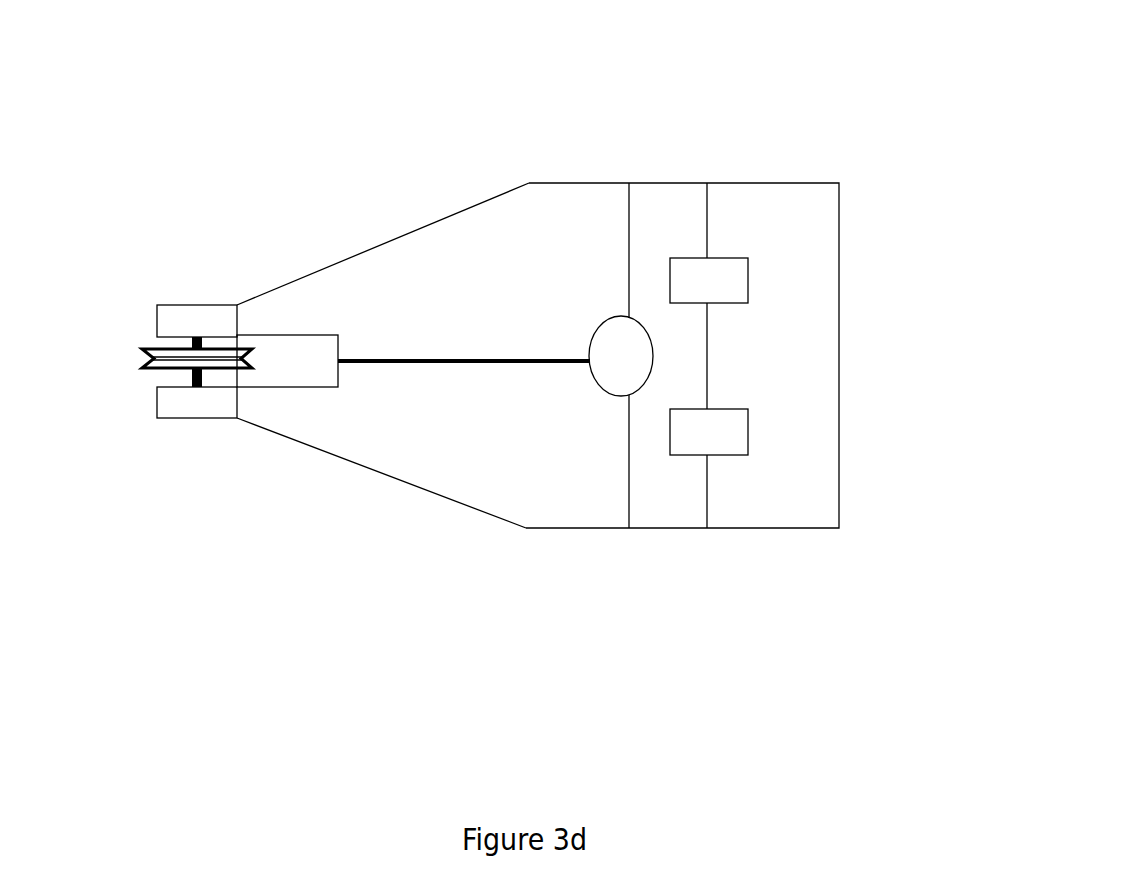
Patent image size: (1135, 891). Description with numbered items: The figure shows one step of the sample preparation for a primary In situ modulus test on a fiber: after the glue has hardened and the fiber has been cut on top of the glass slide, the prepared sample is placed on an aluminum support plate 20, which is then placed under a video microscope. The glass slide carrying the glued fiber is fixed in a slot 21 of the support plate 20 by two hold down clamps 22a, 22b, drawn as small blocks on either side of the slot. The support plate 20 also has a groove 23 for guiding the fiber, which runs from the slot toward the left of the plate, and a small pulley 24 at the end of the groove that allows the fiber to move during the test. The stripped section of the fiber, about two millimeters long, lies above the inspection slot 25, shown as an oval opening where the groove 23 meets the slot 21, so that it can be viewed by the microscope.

The aluminum support plate 20 is at (355, 230).
The slot 21 is at (653, 497).
The hold down clamp 22a is at (732, 275).
The hold down clamp 22b is at (732, 441).
The groove 23 is at (457, 365).
The small pulley 24 is at (160, 360).
The inspection slot 25 is at (612, 340).